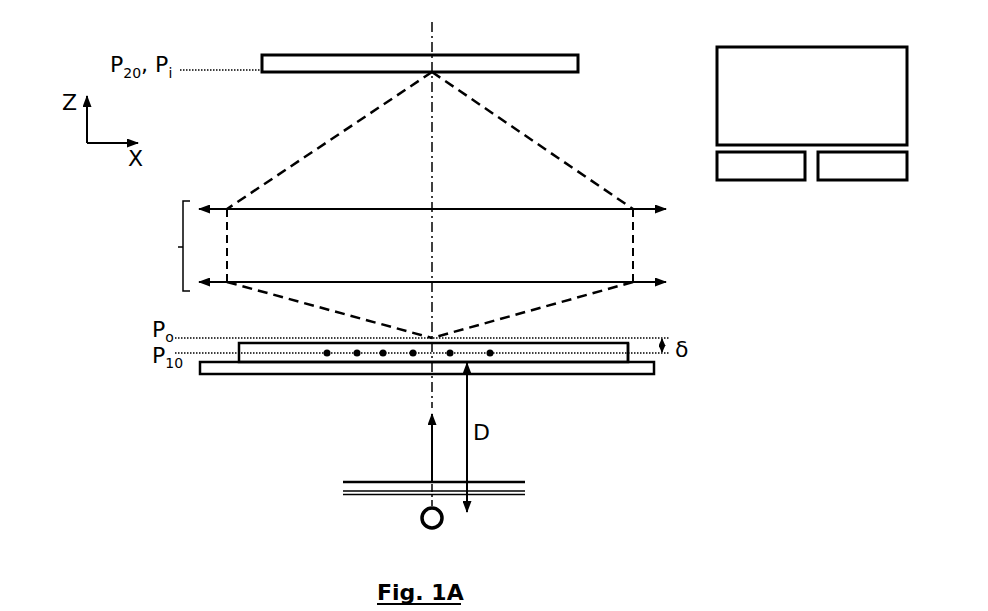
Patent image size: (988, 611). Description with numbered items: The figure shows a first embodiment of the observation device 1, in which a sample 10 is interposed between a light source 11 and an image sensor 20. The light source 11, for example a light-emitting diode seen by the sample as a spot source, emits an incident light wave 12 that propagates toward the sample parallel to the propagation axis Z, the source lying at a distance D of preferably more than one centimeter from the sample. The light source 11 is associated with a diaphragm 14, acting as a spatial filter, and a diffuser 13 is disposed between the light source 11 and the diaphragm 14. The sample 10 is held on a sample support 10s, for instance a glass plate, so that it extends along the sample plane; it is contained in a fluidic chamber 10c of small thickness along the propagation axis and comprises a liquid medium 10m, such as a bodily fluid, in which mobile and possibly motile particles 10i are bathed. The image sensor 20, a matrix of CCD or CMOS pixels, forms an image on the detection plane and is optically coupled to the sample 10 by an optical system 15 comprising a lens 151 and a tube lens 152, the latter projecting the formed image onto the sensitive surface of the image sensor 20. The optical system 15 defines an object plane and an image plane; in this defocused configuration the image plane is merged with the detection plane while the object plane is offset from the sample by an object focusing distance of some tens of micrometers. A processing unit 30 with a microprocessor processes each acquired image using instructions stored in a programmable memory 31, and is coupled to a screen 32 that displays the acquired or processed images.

The microscope imaging system 1 is at (60, 158).
The image sensor 20 is at (258, 62).
The optical system 15 is at (390, 246).
The tube lens 152 is at (326, 212).
The lens 151 is at (262, 287).
The sample 10 is at (599, 350).
The liquid medium 10m is at (554, 350).
The mobile particles 10i is at (453, 344).
The fluidic chamber 10c is at (631, 351).
The sample support 10s is at (232, 377).
The incident light wave 12 is at (417, 448).
The diaphragm 14 is at (340, 480).
The diffuser 13 is at (341, 494).
The light source 11 is at (419, 520).
The screen 32 is at (760, 60).
The processing unit 30 is at (750, 168).
The programmable memory 31 is at (852, 168).